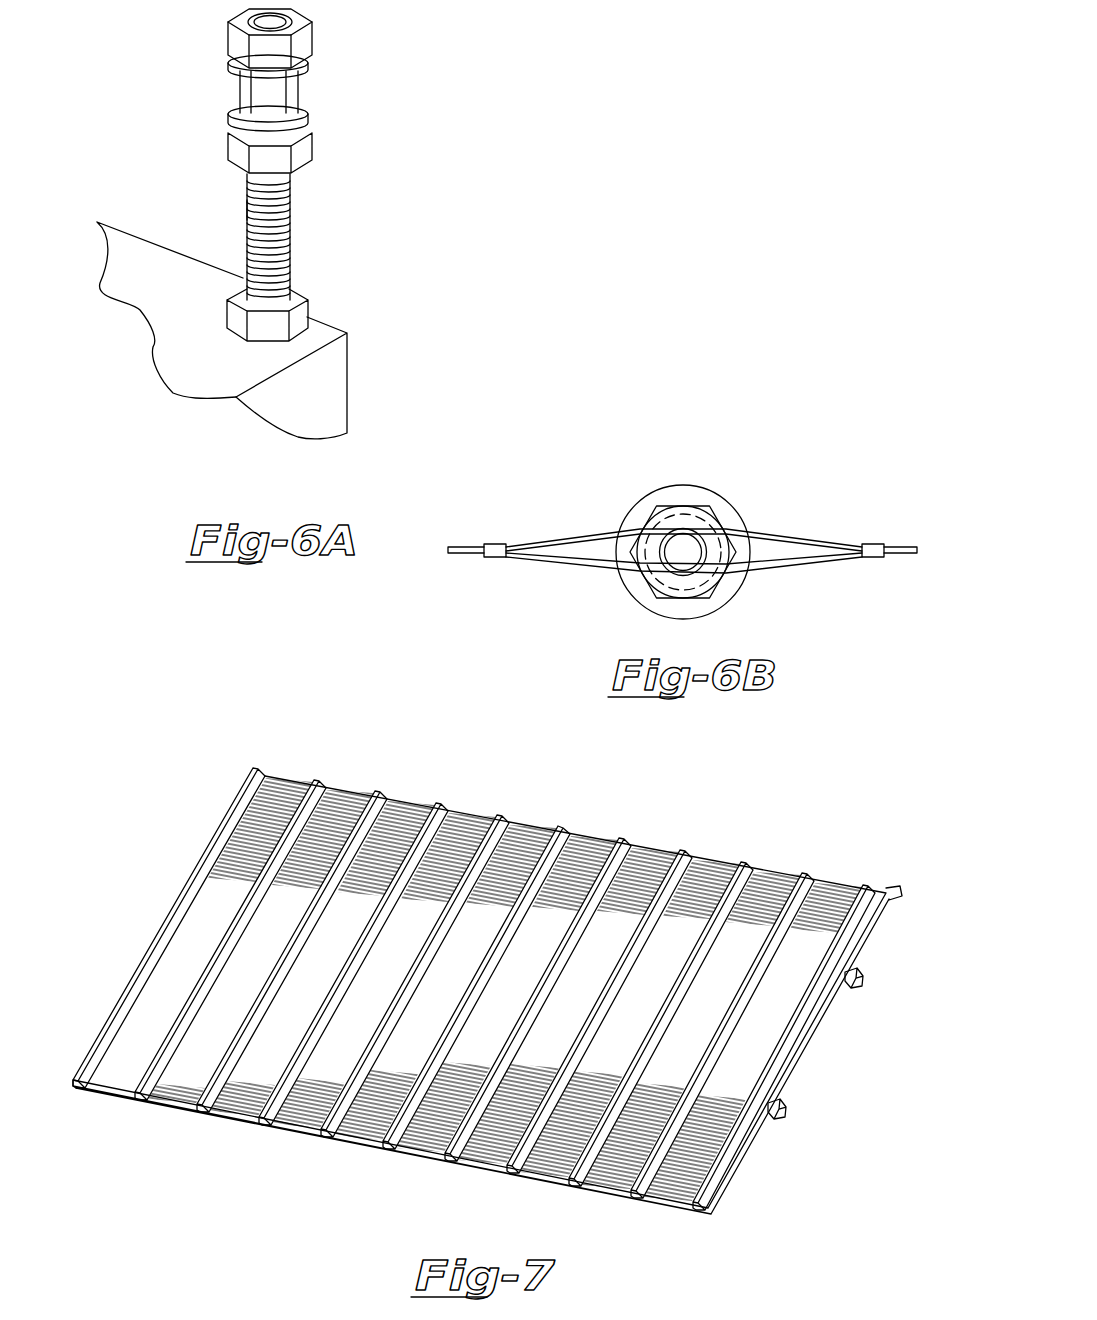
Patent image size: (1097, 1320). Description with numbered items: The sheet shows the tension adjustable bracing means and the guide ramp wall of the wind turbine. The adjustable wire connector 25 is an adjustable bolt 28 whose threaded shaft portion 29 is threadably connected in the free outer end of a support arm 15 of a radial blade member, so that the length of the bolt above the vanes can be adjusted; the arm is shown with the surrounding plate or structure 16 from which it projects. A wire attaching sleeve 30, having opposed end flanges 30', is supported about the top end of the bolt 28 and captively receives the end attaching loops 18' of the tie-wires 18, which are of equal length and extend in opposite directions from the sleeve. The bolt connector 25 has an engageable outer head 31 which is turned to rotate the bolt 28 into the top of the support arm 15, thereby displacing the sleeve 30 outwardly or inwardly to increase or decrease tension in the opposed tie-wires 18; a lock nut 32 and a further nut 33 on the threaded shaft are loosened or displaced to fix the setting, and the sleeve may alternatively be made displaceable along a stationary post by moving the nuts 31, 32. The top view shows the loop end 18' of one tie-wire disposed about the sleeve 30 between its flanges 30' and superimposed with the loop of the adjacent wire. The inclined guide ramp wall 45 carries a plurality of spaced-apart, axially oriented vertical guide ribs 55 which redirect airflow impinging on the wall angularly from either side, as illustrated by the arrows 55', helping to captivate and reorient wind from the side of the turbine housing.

In FIG. 6A, the support arm 15 is at (330, 383).
In FIG. 6A, the support plate 16 is at (212, 367).
In FIG. 6B, the tie-wire 18 is at (679, 516).
In FIG. 6B, the end attaching loop 18' is at (684, 543).
In FIG. 6A, the adjustable wire connector 25 is at (362, 59).
In FIG. 6A, the adjustable bolt 28 is at (298, 208).
In FIG. 6B, the adjustable bolt 28 is at (713, 485).
In FIG. 6A, the threaded shaft portion 29 is at (247, 210).
In FIG. 6A, the wire attaching sleeve 30 is at (317, 92).
In FIG. 6B, the wire attaching sleeve 30 is at (652, 574).
In FIG. 6A, the end flange 30' is at (281, 84).
In FIG. 6B, the end flange 30' is at (662, 497).
In FIG. 6A, the outer head 31 is at (302, 45).
In FIG. 6A, the lock nut 32 is at (302, 152).
In FIG. 6A, the bottom nut 33 is at (237, 315).
In FIG. 7, the inclined guide ramp wall 45 is at (494, 778).
In FIG. 7, the vertical guide rib 55 is at (474, 1000).
In FIG. 7, the arrows 55' is at (505, 1028).